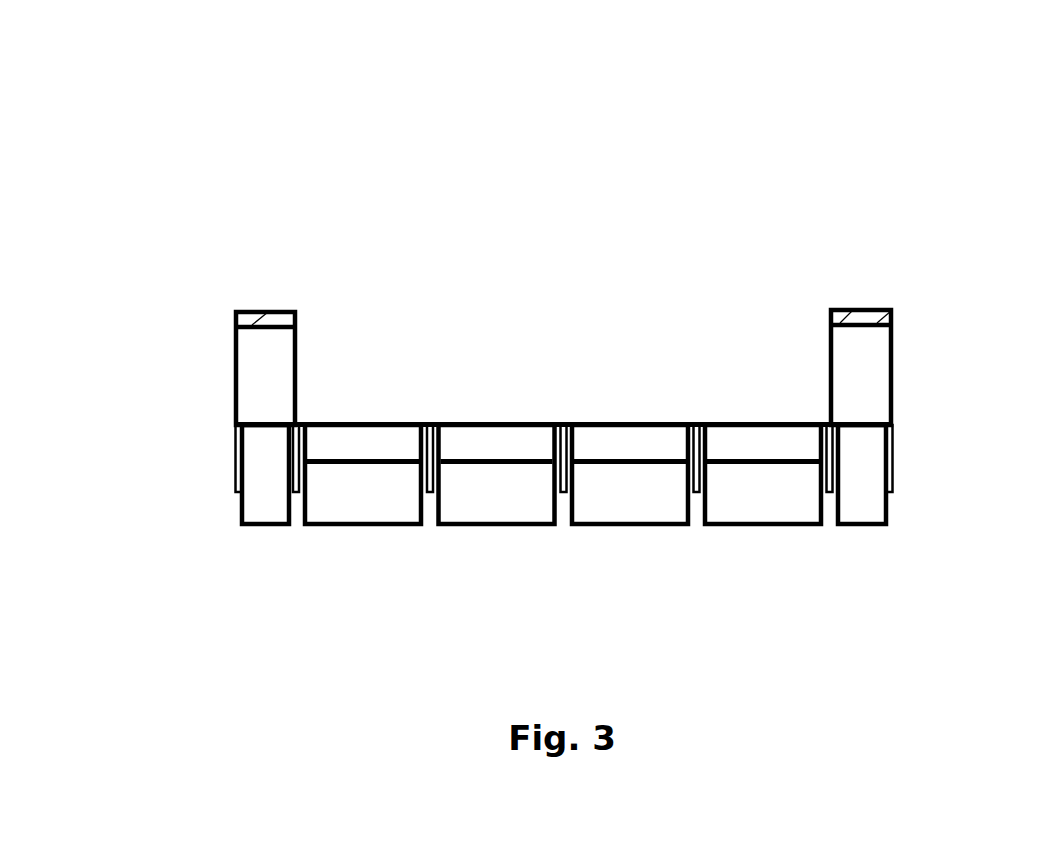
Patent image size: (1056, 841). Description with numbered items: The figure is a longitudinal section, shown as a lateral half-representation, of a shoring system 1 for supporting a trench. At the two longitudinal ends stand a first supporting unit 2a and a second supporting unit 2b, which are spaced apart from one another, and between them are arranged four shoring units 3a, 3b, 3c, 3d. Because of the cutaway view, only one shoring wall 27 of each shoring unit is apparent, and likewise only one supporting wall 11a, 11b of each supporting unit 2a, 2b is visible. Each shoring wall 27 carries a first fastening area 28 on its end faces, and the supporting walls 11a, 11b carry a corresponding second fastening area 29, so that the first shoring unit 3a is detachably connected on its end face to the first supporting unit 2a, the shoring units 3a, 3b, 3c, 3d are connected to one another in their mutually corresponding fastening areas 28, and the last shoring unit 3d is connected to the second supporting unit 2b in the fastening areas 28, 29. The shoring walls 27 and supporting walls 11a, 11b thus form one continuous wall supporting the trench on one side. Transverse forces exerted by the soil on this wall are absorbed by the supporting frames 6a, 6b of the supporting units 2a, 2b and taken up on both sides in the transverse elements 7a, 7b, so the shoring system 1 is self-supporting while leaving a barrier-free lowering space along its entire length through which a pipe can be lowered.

The shoring system 1 is at (152, 181).
The first supporting unit 2a is at (262, 527).
The second supporting unit 2b is at (870, 527).
The first shoring unit 3a is at (363, 527).
The second shoring unit 3b is at (497, 527).
The third shoring unit 3c is at (632, 527).
The fourth shoring unit 3d is at (770, 527).
The supporting frame 6a is at (272, 372).
The supporting frame 6b is at (868, 375).
The transverse element 7a is at (268, 310).
The transverse element 7b is at (865, 317).
The supporting wall 11a is at (257, 470).
The supporting wall 11b is at (863, 473).
The second shoring wall 27 is at (358, 459).
The first fastening area 28 is at (308, 453).
The second fastening area 29 is at (233, 440).